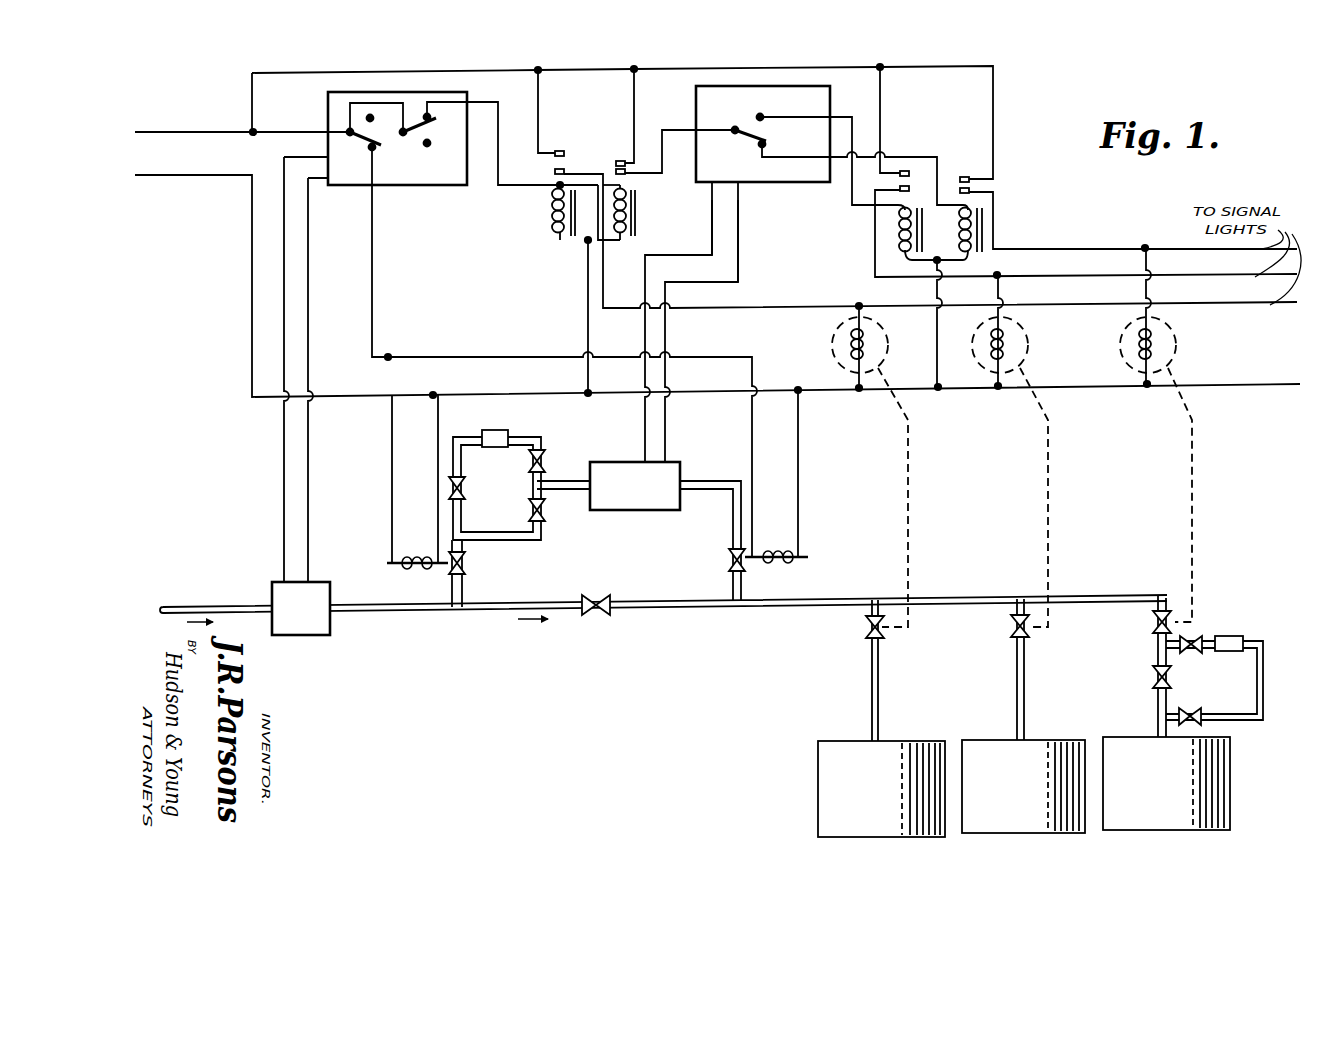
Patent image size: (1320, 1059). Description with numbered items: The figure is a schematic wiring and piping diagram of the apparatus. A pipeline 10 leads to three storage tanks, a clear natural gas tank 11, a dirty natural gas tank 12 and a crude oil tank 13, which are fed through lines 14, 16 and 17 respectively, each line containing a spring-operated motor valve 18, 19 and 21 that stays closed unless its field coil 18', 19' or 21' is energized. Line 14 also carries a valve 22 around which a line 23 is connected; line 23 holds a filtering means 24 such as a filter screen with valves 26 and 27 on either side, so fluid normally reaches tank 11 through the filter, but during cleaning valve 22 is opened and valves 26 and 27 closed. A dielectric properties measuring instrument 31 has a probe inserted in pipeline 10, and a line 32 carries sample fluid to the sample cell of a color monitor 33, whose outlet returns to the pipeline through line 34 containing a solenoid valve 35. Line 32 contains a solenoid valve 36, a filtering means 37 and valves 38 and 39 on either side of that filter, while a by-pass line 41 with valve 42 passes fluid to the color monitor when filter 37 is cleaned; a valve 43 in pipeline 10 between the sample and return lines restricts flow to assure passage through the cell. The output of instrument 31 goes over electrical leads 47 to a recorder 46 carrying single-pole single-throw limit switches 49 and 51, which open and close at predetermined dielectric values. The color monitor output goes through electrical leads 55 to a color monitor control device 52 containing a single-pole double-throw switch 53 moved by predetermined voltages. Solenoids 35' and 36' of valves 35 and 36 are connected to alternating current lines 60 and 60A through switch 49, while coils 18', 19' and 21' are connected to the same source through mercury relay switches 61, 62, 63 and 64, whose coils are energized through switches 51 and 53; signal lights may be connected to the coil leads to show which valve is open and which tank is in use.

The pipeline 10 is at (233, 606).
The clear natural gas tank 11 is at (1232, 788).
The dirty natural gas tank 12 is at (1047, 740).
The crude oil tank 13 is at (818, 758).
The line 14 is at (1157, 724).
The line 16 is at (1017, 696).
The line 17 is at (871, 697).
The motor valve 18 is at (1144, 624).
The field coil 18' is at (1170, 435).
The motor valve 19 is at (1003, 628).
The field coil 19' is at (1020, 451).
The motor valve 21 is at (858, 628).
The field coil 21' is at (852, 466).
The valve 22 is at (1153, 680).
The line 23 is at (1204, 636).
The filtering means 24 is at (1240, 636).
The valve 26 is at (1190, 654).
The valve 27 is at (1200, 716).
The dielectric properties measuring instrument 31 is at (311, 619).
The line 32 is at (464, 590).
The color monitor 33 is at (645, 496).
The line 34 is at (733, 530).
The solenoid valve 35 is at (713, 560).
The solenoid 35' is at (782, 490).
The solenoid valve 36 is at (474, 565).
The solenoid 36' is at (417, 496).
The filtering means 37 is at (506, 429).
The valve 38 is at (465, 488).
The valve 39 is at (543, 453).
The by-pass line 41 is at (476, 536).
The valve 42 is at (544, 520).
The valve 43 is at (590, 615).
The recorder 46 is at (410, 188).
The electrical leads 47 is at (284, 270).
The limit switch 49 is at (371, 151).
The limit switch 51 is at (426, 148).
The color monitor control device 52 is at (770, 185).
The switch 53 is at (745, 138).
The electrical leads 55 is at (712, 238).
The alternating current line 60 is at (191, 131).
The alternating current line 60A is at (183, 169).
The mercury relay switch 61 is at (641, 214).
The mercury relay switch 62 is at (553, 220).
The mercury relay switch 63 is at (986, 222).
The mercury relay switch 64 is at (897, 240).